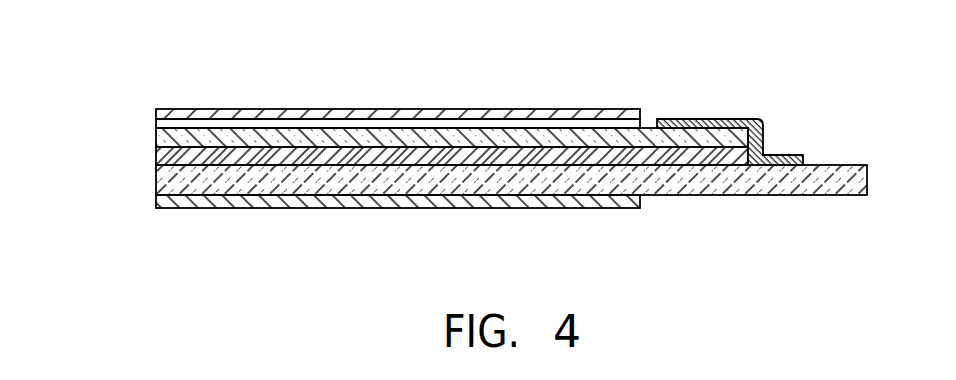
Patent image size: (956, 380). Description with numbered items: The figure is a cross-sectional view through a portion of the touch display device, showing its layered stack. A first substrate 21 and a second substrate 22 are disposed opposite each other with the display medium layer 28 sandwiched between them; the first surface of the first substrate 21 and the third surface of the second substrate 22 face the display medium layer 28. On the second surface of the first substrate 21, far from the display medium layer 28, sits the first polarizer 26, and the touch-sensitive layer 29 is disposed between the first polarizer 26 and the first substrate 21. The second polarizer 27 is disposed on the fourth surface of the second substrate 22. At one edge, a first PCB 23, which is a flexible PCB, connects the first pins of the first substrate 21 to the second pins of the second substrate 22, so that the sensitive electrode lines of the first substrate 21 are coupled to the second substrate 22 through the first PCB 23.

The first substrate 21 is at (317, 133).
The second substrate 22 is at (730, 178).
The first PCB 23 is at (730, 125).
The first polarizer 26 is at (478, 118).
The second polarizer 27 is at (333, 202).
The display medium layer 28 is at (442, 153).
The touch-sensitive layer 29 is at (525, 127).